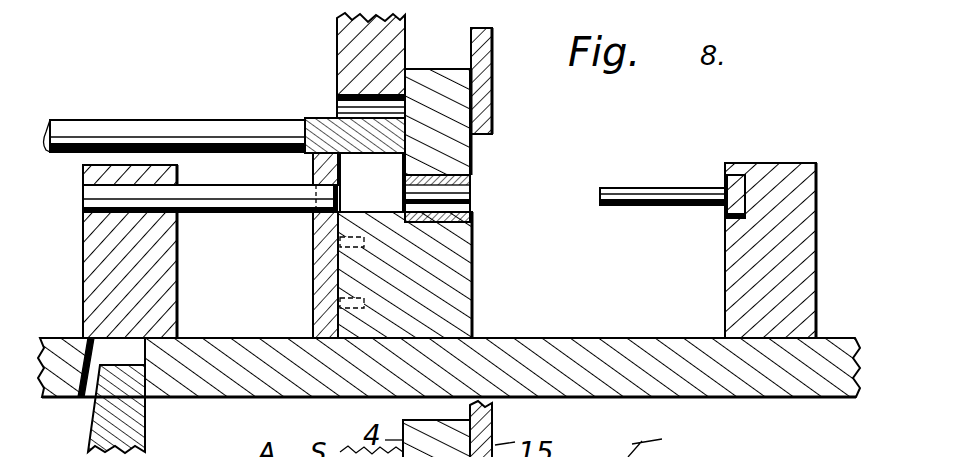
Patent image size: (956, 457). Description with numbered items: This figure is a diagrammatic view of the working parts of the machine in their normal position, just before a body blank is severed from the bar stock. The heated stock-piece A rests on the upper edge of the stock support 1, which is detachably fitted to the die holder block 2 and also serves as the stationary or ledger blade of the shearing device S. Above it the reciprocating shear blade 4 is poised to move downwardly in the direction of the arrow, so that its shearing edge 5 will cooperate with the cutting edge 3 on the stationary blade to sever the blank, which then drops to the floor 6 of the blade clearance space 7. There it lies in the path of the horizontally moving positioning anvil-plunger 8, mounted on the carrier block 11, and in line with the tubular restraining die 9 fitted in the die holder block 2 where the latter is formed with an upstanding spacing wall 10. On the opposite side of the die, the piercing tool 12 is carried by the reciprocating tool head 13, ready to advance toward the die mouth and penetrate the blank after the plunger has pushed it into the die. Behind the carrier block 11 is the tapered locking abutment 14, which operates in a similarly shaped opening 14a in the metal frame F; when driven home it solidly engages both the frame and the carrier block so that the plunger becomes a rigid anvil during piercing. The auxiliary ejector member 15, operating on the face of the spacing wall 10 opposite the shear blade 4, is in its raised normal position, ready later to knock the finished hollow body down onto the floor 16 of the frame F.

The stock support 1 is at (312, 172).
The die holder block 2 is at (462, 283).
The cutting edge 3 is at (371, 166).
The reciprocating shear blade 4 is at (405, 50).
The shearing edge 5 is at (330, 102).
The floor 6 is at (369, 206).
The blade clearance space 7 is at (371, 182).
The positioning anvil-plunger 8 is at (232, 216).
The tubular restraining die 9 is at (470, 200).
The spacing wall 10 is at (457, 152).
The carrier block 11 is at (95, 268).
The piercing tool 12 is at (672, 183).
The reciprocating tool head 13 is at (800, 237).
The locking abutment 14 is at (128, 420).
The tapered opening 14a is at (82, 338).
The auxiliary ejector member 15 is at (492, 92).
The floor 16 is at (591, 332).
The stock-piece A is at (230, 126).
The shearing device S is at (335, 70).
The metal frame F is at (249, 374).